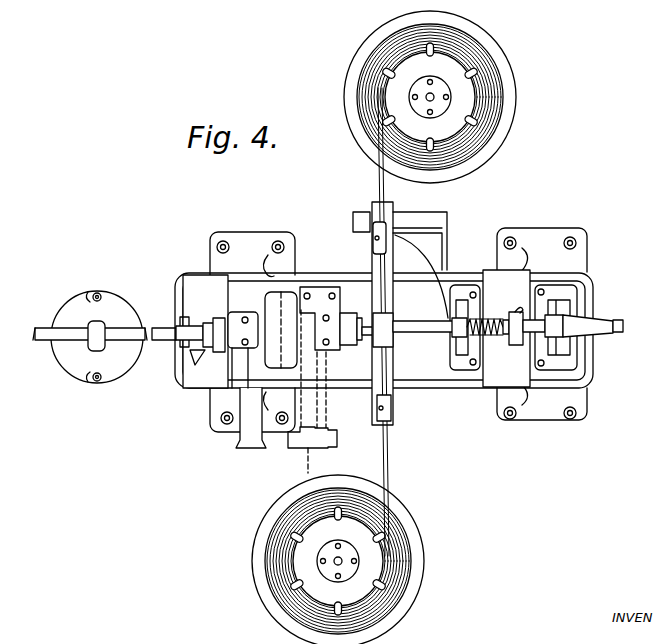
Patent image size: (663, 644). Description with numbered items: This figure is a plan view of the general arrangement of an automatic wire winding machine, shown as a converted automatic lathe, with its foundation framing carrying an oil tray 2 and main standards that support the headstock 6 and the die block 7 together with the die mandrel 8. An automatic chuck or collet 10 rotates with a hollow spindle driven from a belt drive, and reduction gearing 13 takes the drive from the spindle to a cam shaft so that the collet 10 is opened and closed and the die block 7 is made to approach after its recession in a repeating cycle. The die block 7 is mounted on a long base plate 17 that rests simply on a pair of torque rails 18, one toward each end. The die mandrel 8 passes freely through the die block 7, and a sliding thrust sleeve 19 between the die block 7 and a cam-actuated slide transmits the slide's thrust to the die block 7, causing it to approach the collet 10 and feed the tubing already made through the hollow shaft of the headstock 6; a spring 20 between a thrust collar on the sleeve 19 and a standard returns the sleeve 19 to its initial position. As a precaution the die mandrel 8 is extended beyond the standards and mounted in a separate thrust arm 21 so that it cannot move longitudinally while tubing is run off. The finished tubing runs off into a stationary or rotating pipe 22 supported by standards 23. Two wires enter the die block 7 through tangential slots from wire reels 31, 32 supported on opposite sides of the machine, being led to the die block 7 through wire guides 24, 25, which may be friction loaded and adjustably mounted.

The oil tray 2 is at (462, 390).
The headstock 6 is at (333, 336).
The die block 7 is at (384, 338).
The die mandrel 8 is at (585, 323).
The automatic chuck or collet 10 is at (353, 320).
The reduction gearing 13 is at (325, 426).
The base plate 17 is at (373, 205).
The torque rails 18 is at (353, 218).
The sliding thrust sleeve 19 is at (408, 321).
The spring 20 is at (500, 338).
The thrust arm 21 is at (603, 335).
The pipe 22 is at (125, 332).
The standards 23 is at (101, 335).
The wire guide 24 is at (373, 245).
The wire guide 25 is at (388, 408).
The wire reel 31 is at (413, 538).
The wire reel 32 is at (490, 98).